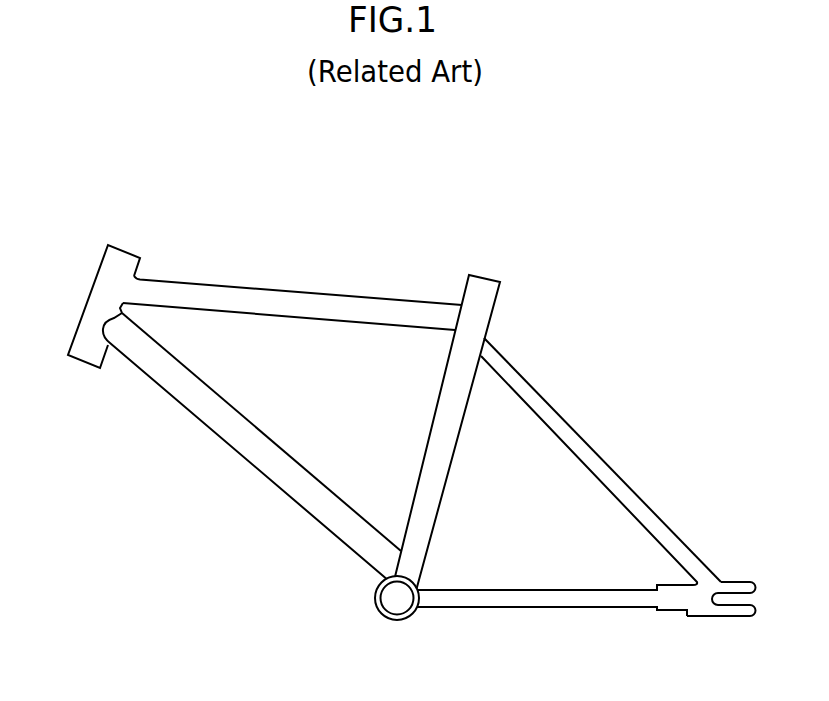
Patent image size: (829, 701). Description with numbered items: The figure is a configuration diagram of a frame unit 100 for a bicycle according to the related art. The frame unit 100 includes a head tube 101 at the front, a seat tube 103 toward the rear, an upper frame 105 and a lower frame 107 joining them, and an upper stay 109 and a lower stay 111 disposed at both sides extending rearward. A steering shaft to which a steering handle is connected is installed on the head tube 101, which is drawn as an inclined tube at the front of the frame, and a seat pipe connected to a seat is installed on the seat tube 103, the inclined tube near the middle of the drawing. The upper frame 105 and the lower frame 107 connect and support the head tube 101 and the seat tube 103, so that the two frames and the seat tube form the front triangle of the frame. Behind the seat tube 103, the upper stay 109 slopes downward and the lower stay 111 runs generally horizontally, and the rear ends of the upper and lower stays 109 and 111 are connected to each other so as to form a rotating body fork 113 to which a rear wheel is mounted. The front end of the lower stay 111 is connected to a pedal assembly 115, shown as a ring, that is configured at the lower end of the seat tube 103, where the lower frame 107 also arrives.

The frame unit 100 is at (620, 289).
The head tube 101 is at (98, 298).
The seat tube 103 is at (482, 282).
The upper frame 105 is at (263, 291).
The lower frame 107 is at (265, 463).
The upper stay 109 is at (612, 475).
The lower stay 111 is at (537, 602).
The rotating body fork 113 is at (735, 587).
The pedal assembly 115 is at (378, 613).